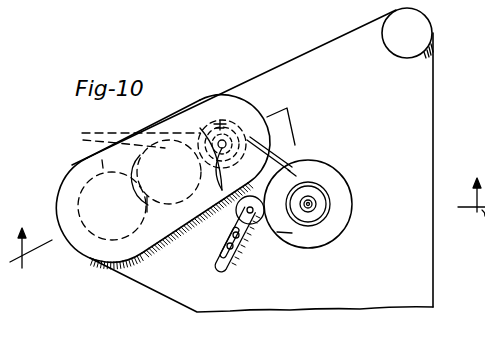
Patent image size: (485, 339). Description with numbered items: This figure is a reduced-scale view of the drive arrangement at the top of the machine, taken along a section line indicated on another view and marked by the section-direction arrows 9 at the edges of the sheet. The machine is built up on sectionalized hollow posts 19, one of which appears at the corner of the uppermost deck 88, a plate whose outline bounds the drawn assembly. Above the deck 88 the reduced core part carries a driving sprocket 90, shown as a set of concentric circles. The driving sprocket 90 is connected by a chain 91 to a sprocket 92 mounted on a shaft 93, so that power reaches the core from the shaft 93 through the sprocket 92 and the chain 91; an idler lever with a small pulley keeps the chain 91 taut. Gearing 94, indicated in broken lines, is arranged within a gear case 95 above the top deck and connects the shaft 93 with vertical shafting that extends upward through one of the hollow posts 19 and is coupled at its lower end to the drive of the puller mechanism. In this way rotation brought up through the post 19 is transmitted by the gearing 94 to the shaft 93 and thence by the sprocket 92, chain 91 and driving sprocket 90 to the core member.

The section line indicator 9 is at (247, 235).
The sectionalized hollow post 19 is at (432, 22).
The uppermost deck 88 is at (414, 140).
The driving sprocket 90 is at (310, 198).
The chain 91 is at (260, 198).
The sprocket 92 is at (219, 112).
The shaft 93 is at (224, 143).
The gearing 94 is at (127, 148).
The gear case 95 is at (78, 256).